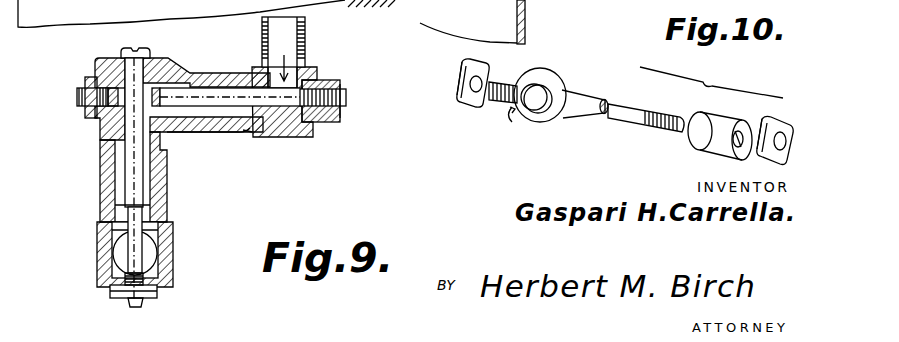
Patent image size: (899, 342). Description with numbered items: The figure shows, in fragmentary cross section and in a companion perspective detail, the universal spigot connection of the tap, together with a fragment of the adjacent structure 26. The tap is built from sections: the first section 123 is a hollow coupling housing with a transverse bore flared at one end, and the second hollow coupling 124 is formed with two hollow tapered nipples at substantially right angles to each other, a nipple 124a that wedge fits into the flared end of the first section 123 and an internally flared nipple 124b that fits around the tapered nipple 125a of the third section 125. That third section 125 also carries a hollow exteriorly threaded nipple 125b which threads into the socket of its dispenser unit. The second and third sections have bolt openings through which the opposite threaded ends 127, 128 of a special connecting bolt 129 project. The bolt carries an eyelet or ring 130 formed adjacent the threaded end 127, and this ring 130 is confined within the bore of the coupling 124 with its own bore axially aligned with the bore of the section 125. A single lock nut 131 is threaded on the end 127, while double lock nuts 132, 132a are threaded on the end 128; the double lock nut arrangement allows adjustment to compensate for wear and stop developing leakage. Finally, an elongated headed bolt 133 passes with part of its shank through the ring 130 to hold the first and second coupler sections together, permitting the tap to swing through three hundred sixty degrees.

In FIG. 9, the wall 26 is at (525, 7).
In FIG. 9, the first section 123 is at (172, 230).
In FIG. 9, the second hollow coupling 124 is at (157, 141).
In FIG. 9, the tapered nipple 124a is at (110, 178).
In FIG. 9, the tapered nipple 124b is at (213, 137).
In FIG. 9, the third section 125 is at (297, 137).
In FIG. 9, the tapered nipple 125a is at (243, 131).
In FIG. 9, the exteriorly threaded nipple 125b is at (297, 37).
In FIG. 9, the threaded end 127 is at (83, 103).
In FIG. 10, the threaded end 127 is at (492, 100).
In FIG. 9, the threaded end 128 is at (347, 103).
In FIG. 10, the threaded end 128 is at (660, 132).
In FIG. 9, the connecting bolt 129 is at (190, 91).
In FIG. 10, the connecting bolt 129 is at (580, 108).
In FIG. 9, the eyelet or ring 130 is at (158, 87).
In FIG. 10, the eyelet or ring 130 is at (545, 71).
In FIG. 9, the single lock nut 131 is at (88, 78).
In FIG. 10, the single lock nut 131 is at (463, 104).
In FIG. 9, the double lock nut 132 is at (320, 79).
In FIG. 10, the double lock nut 132 is at (718, 108).
In FIG. 9, the double lock nut 132a is at (341, 88).
In FIG. 10, the double lock nut 132a is at (773, 122).
In FIG. 9, the elongated headed bolt 133 is at (130, 190).